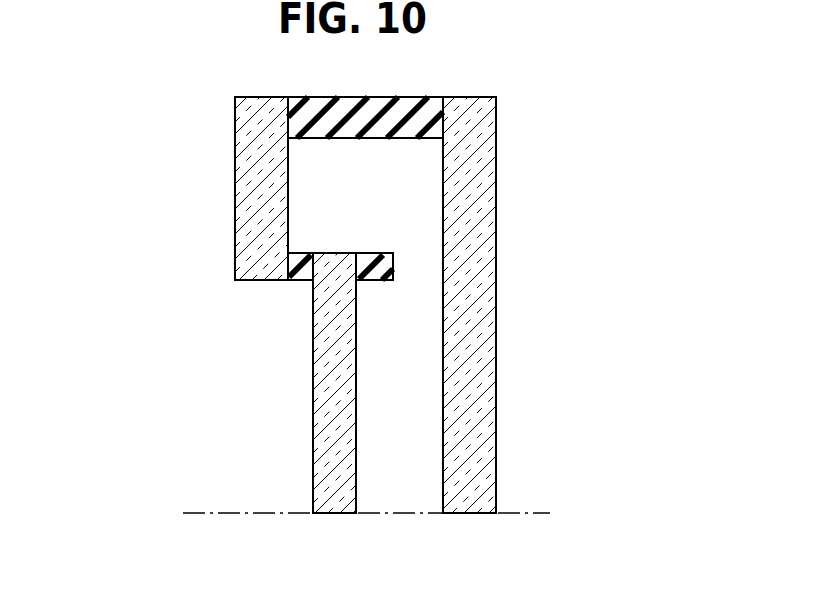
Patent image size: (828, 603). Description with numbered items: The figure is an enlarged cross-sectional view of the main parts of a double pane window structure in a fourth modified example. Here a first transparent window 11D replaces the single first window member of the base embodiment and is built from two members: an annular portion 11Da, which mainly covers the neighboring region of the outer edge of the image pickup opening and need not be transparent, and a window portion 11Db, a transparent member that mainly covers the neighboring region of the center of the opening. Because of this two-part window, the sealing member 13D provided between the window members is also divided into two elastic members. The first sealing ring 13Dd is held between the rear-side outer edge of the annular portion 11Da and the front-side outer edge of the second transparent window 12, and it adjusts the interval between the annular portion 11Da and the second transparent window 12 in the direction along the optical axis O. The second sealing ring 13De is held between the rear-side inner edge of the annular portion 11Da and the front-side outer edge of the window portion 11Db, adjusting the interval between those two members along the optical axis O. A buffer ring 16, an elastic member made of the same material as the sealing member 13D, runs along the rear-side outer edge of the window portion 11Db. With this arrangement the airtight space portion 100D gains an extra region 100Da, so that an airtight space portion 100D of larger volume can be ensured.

The airtight space portion 100D is at (372, 281).
The extra region 100Da is at (330, 162).
The first transparent window 11D is at (218, 305).
The annular portion 11Da is at (250, 148).
The window portion 11Db is at (322, 320).
The second transparent window 12 is at (482, 163).
The sealing member 13D is at (476, 193).
The first sealing ring 13Dd is at (392, 125).
The second sealing ring 13De is at (299, 262).
The buffer ring 16 is at (375, 270).
The optical axis O is at (210, 514).